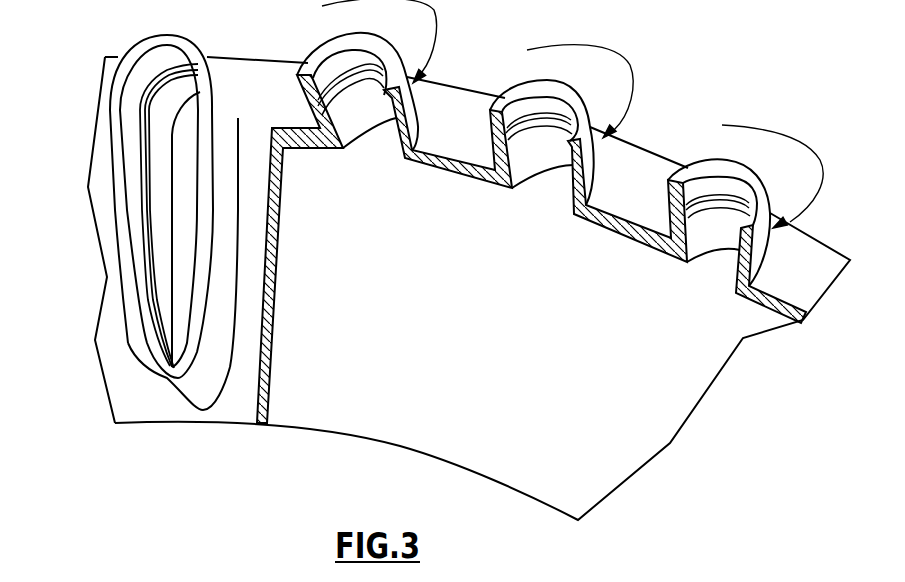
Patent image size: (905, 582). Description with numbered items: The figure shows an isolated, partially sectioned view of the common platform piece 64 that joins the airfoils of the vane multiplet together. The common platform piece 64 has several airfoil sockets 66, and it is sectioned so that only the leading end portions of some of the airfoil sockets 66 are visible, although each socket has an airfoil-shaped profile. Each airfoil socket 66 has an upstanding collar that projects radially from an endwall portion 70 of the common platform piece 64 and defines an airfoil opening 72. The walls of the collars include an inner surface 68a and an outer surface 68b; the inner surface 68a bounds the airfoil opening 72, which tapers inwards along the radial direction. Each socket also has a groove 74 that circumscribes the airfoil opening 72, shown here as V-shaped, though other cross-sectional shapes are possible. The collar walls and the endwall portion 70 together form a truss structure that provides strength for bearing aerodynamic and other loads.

The common platform piece 64 is at (280, 461).
The airfoil socket 66 is at (234, 104).
The inner surface 68a is at (180, 109).
The outer surface 68b is at (214, 313).
The endwall portion 70 is at (238, 400).
The airfoil opening 72 is at (179, 196).
The groove 74 is at (168, 86).